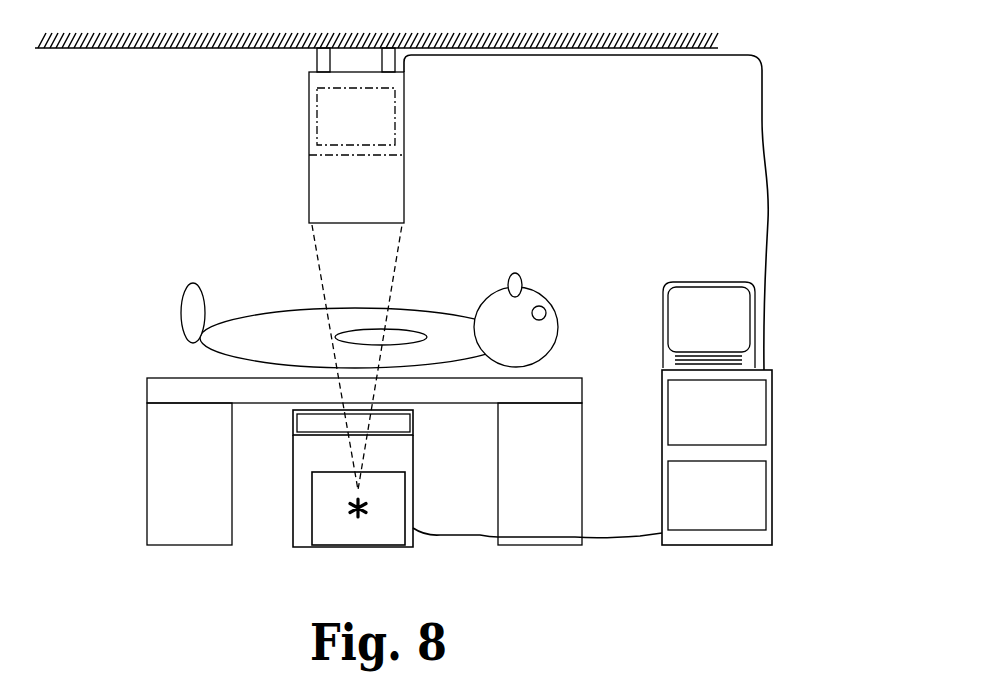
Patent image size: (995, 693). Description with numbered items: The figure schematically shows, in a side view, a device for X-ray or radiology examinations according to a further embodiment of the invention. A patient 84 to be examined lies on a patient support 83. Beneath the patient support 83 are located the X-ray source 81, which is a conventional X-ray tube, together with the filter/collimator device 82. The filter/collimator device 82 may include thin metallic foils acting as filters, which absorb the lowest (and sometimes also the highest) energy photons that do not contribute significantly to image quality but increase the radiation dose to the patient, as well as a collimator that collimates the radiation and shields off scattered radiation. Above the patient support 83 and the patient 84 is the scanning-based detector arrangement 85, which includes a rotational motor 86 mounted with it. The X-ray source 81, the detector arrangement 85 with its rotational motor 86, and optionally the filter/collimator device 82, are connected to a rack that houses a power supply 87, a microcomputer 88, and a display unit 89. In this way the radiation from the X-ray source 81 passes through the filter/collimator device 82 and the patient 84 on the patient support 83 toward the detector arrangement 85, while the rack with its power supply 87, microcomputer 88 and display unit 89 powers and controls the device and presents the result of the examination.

The X-ray source 81 is at (312, 522).
The filter/collimator device 82 is at (295, 423).
The patient support 83 is at (147, 433).
The patient 84 is at (423, 311).
The detector arrangement 85 is at (404, 180).
The rotational motor 86 is at (404, 130).
The power supply 87 is at (768, 488).
The microcomputer 88 is at (767, 403).
The display unit 89 is at (665, 300).